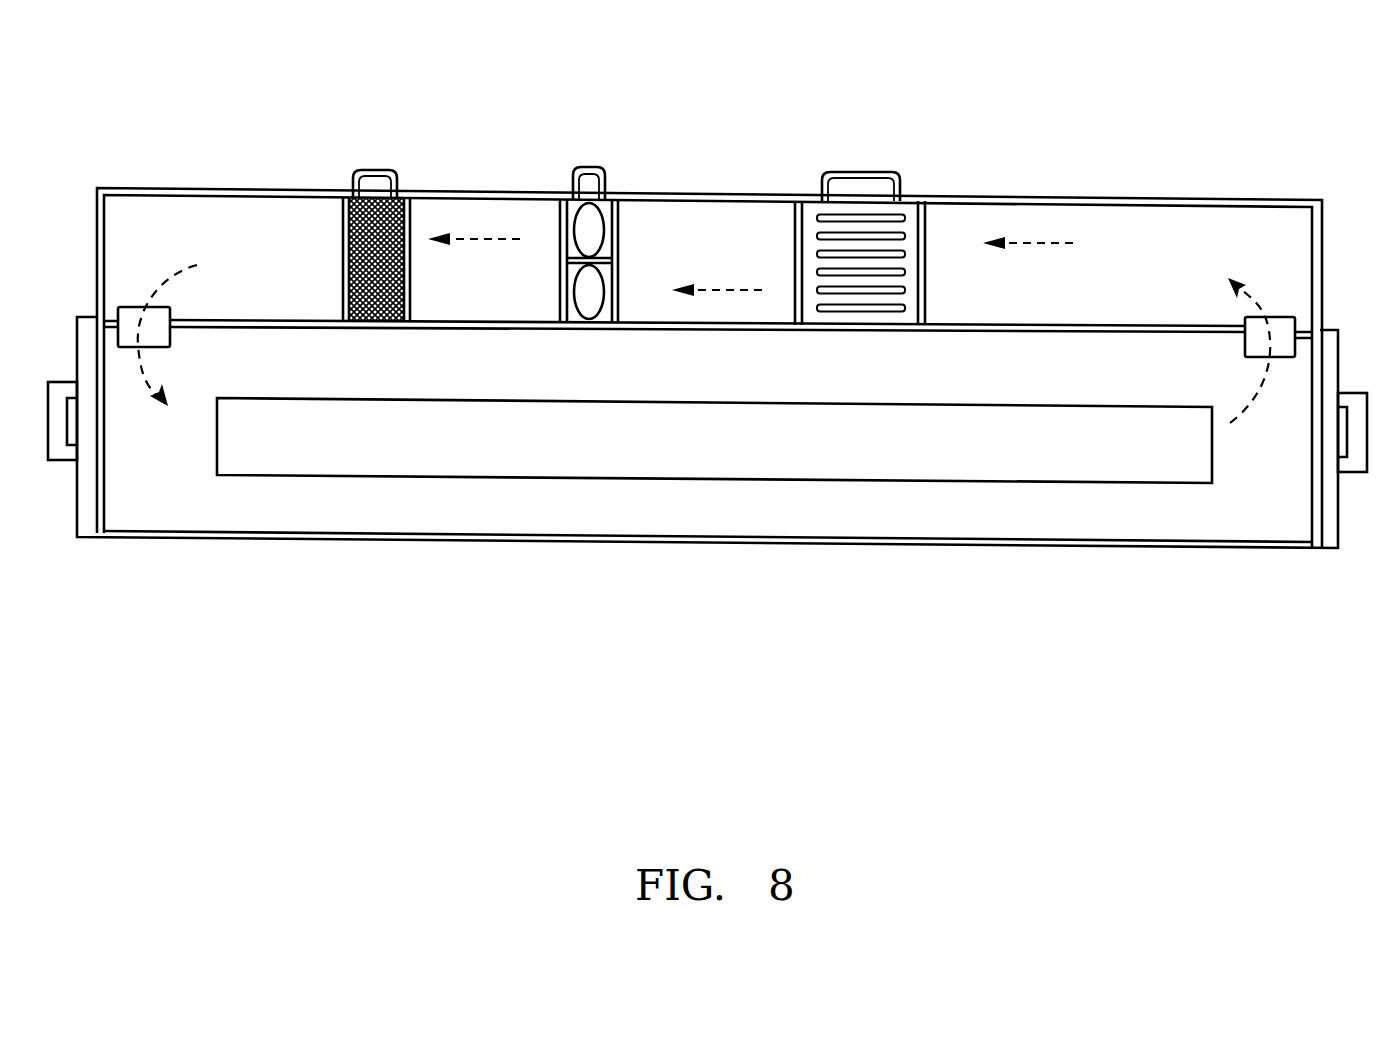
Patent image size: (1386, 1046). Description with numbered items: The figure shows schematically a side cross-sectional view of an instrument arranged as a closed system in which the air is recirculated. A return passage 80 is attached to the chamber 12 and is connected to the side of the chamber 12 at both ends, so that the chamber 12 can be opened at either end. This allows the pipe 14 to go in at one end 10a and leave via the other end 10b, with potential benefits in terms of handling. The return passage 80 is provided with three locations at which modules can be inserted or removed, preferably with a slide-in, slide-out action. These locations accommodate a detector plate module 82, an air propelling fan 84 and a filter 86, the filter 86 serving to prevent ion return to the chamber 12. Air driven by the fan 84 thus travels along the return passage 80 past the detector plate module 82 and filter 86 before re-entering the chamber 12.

The one end of the chamber 10a is at (88, 510).
The other end of the chamber 10b is at (1320, 517).
The chamber 12 is at (993, 565).
The pipe 14 is at (410, 445).
The return passage 80 is at (1137, 253).
The detector plate module 82 is at (910, 210).
The air propelling fan 84 is at (590, 230).
The filter 86 is at (410, 214).